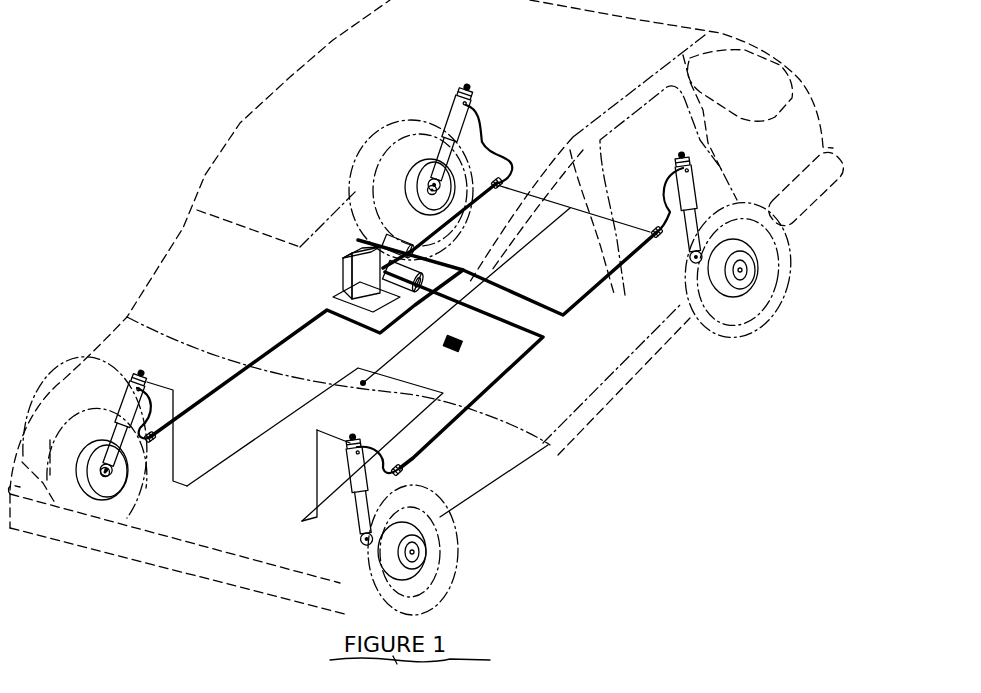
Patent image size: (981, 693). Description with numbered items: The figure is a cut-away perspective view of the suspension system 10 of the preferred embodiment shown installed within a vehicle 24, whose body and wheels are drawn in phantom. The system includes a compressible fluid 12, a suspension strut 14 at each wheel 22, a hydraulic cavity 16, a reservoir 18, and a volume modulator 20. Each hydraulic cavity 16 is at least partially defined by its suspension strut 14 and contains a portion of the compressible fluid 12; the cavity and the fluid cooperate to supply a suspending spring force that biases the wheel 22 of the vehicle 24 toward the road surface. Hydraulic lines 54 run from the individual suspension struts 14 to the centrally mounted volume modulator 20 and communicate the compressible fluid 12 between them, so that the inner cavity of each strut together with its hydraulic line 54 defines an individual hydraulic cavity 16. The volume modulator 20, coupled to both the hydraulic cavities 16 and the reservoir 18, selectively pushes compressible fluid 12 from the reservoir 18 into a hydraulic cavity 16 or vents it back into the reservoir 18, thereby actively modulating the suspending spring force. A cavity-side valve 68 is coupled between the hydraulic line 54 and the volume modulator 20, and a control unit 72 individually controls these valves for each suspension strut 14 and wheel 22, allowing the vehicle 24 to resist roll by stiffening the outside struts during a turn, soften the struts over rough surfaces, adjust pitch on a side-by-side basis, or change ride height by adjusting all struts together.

The suspension system 10 is at (140, 210).
The compressible fluid 12 is at (340, 203).
The suspension strut 14 is at (460, 107).
The hydraulic cavity 16 is at (340, 457).
The reservoir 18 is at (345, 262).
The volume modulator 20 is at (380, 234).
The wheel 22 is at (374, 148).
The vehicle 24 is at (238, 576).
The hydraulic lines 54 is at (490, 155).
The cavity-side valve 68 is at (397, 327).
The control unit 72 is at (347, 256).